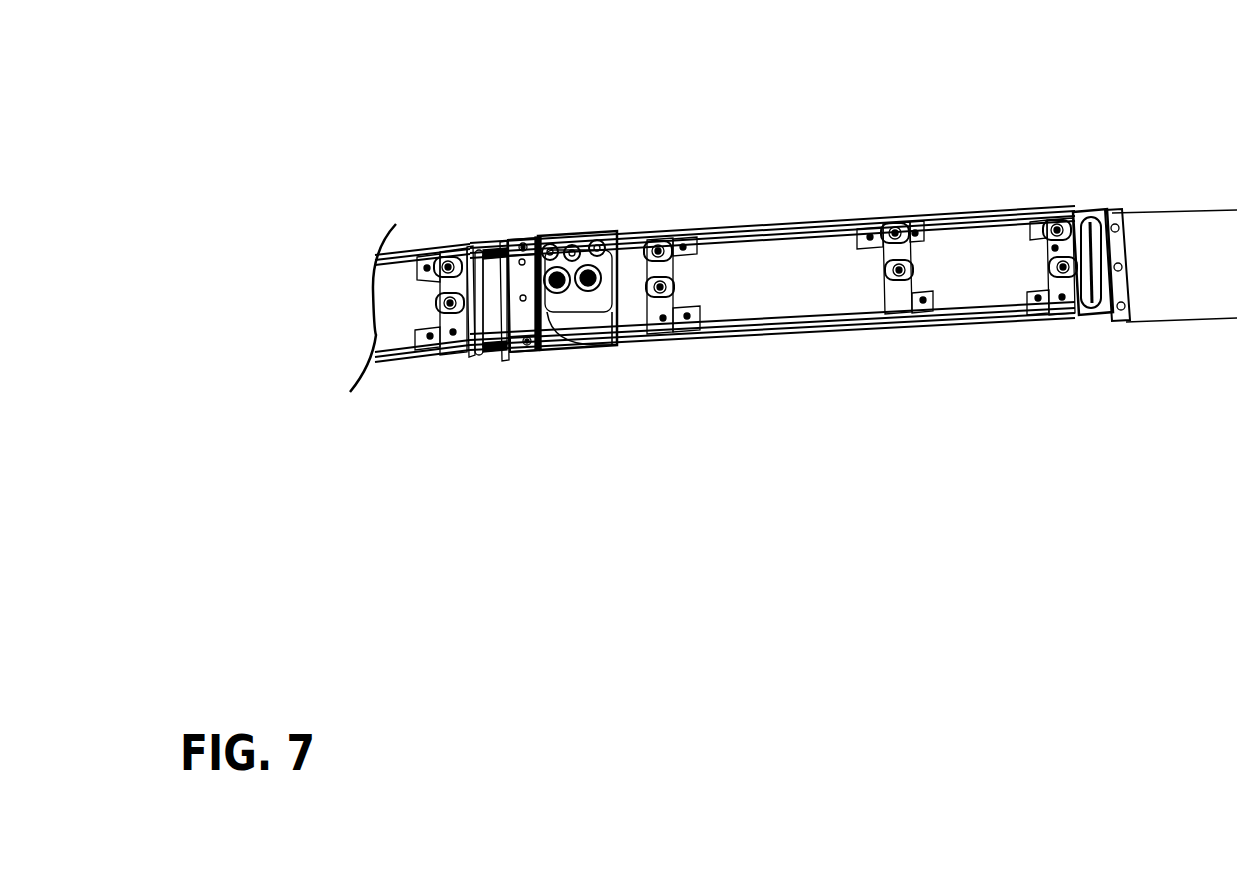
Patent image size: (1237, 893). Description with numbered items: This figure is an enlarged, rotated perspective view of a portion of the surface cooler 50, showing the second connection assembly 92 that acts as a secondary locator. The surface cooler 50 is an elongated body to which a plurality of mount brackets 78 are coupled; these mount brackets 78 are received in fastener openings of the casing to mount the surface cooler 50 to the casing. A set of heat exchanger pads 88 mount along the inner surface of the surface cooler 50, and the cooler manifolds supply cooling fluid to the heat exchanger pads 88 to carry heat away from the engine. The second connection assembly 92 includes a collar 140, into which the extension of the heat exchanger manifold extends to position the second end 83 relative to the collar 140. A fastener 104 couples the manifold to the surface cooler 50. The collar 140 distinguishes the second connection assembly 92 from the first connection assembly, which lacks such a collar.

The surface cooler 50 is at (403, 128).
The mount bracket 78 is at (435, 335).
The second end 83 is at (503, 352).
The heat exchanger pad 88 is at (784, 266).
The second connection assembly 92 is at (575, 211).
The fastener 104 is at (547, 243).
The collar 140 is at (517, 243).